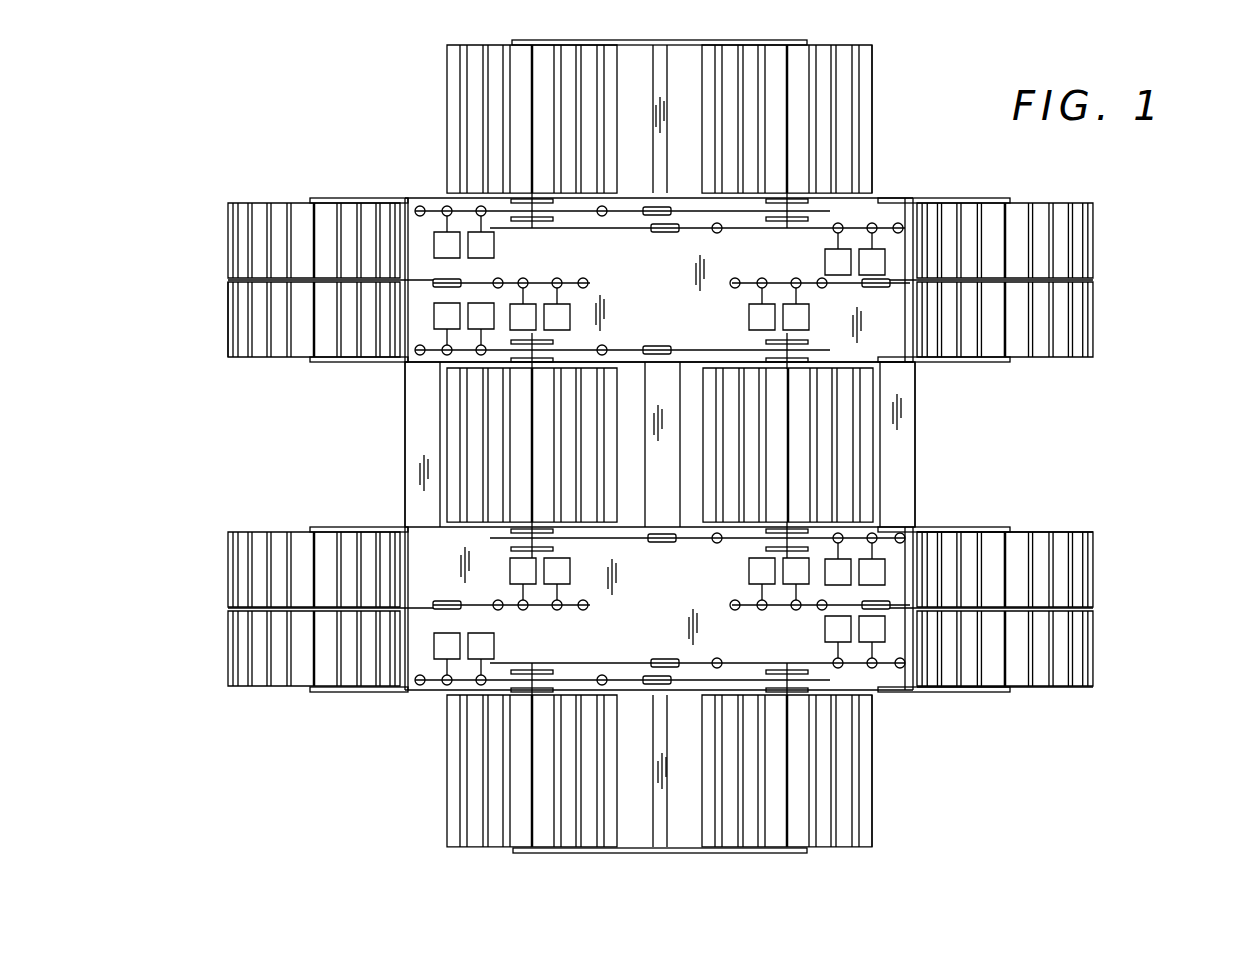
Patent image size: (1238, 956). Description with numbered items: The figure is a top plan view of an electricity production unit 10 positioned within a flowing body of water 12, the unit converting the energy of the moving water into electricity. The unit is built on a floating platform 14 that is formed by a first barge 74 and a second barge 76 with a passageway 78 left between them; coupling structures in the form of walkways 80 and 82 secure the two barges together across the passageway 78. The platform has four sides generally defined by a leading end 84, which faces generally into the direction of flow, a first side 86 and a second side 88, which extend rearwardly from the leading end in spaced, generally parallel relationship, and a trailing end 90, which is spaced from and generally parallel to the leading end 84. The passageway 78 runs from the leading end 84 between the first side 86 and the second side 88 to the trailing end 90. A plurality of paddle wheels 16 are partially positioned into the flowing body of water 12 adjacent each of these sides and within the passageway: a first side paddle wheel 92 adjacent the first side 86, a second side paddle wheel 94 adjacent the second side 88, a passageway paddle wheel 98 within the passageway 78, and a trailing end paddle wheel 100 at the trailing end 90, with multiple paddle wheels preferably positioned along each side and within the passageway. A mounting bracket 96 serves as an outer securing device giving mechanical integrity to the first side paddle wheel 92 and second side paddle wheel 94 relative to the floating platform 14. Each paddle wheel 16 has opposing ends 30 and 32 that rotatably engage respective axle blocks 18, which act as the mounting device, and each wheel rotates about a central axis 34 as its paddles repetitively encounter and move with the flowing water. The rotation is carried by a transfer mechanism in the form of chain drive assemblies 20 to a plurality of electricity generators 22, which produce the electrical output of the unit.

The electricity production unit 10 is at (183, 788).
The flowing body of water 12 is at (1140, 785).
The floating platform 14 is at (978, 445).
The paddle wheel 16 is at (960, 480).
The axle block 18 is at (1010, 690).
The chain drive assembly 20 is at (812, 608).
The electricity generator 22 is at (747, 585).
The opposing end 30 is at (1075, 685).
The opposing end 32 is at (1078, 528).
The central axis 34 is at (1008, 528).
The first barge 74 is at (873, 212).
The second barge 76 is at (875, 682).
The passageway 78 is at (960, 383).
The walkway 80 is at (917, 420).
The walkway 82 is at (405, 472).
The leading end 84 is at (950, 680).
The first side 86 is at (430, 200).
The second side 88 is at (430, 690).
The trailing end 90 is at (405, 362).
The first side paddle wheel 92 is at (872, 135).
The second side paddle wheel 94 is at (873, 828).
The mounting bracket 96 is at (510, 852).
The passageway paddle wheel 98 is at (875, 487).
The trailing end paddle wheel 100 is at (228, 318).